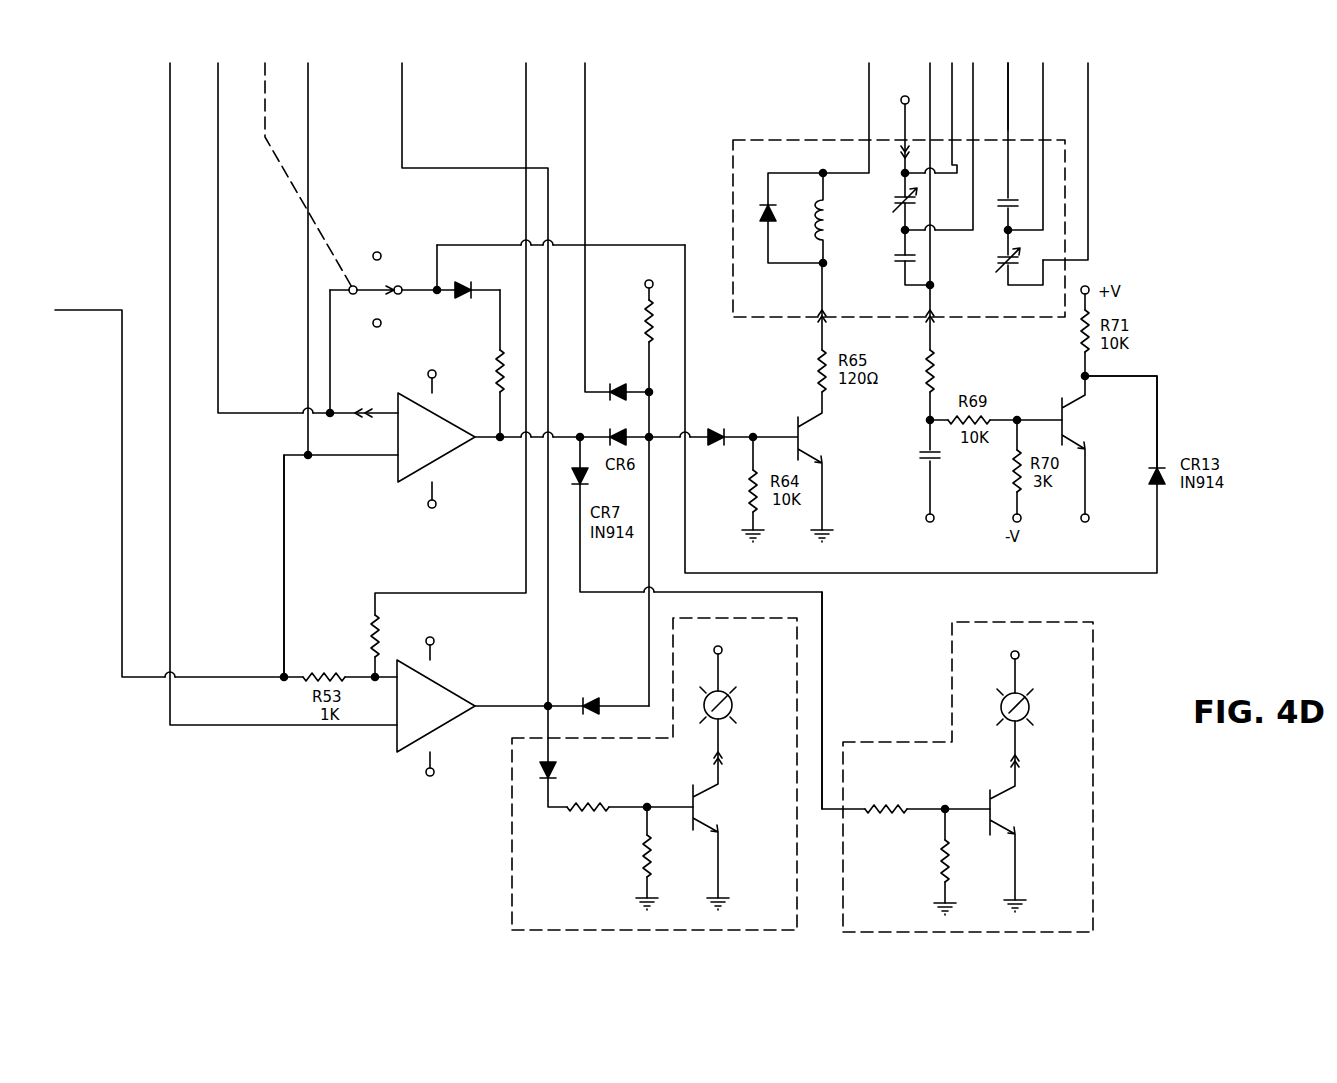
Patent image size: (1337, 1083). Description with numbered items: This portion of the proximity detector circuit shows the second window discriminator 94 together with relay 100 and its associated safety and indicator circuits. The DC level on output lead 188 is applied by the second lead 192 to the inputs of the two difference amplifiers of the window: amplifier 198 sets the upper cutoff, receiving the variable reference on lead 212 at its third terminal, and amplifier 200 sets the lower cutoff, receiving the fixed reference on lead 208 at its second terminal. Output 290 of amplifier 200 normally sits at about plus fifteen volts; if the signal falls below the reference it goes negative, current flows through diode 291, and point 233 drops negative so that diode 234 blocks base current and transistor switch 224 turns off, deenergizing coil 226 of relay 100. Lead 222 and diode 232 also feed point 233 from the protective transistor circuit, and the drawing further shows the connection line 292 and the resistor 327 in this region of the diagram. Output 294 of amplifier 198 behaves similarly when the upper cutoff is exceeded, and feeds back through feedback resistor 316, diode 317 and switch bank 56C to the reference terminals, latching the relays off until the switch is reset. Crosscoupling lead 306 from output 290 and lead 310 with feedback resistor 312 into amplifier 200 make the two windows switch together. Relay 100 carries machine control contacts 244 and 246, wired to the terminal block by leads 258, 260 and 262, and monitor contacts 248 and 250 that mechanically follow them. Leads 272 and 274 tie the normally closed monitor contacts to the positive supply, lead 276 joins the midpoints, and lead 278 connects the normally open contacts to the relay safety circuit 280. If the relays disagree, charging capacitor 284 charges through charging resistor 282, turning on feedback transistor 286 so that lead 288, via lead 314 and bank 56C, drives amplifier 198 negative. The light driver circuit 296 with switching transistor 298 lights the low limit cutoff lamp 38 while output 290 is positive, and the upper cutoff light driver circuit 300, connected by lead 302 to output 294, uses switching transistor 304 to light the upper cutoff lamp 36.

The output lead 188 is at (100, 310).
The lead 208 is at (168, 142).
The lead 212 is at (216, 130).
The lead 222 is at (587, 124).
The switch bank 56C is at (406, 256).
The lead 314 is at (330, 341).
The diode 317 is at (489, 291).
The feedback resistor 316 is at (500, 395).
The difference amplifier 198 is at (447, 442).
The second lead 192 is at (285, 545).
The lead 310 is at (526, 531).
The feedback resistor 312 is at (372, 615).
The diode 232 is at (607, 398).
The point 233 is at (649, 433).
The output lead 294 is at (581, 451).
The line to diode CR9 292 is at (649, 542).
The resistor R47 327 is at (653, 345).
The lead 274 is at (903, 158).
The coil 226 is at (819, 235).
The monitor contacts 248 is at (900, 202).
The monitor contacts 250 is at (900, 265).
The lead 278 is at (940, 135).
The lead 276 is at (949, 236).
The lead 272 is at (932, 268).
The machine control contact set 244 is at (1005, 200).
The machine control contact set 246 is at (1003, 268).
The lead 260 is at (1055, 104).
The lead 258 is at (1008, 126).
The lead 262 is at (1088, 108).
The relay 100 is at (786, 318).
The charging resistor 282 is at (920, 377).
The charging capacitor 284 is at (935, 462).
The feedback transistor 286 is at (1091, 452).
The relay safety circuit 280 is at (1166, 385).
The lead 288 is at (1157, 555).
The diode 234 is at (714, 446).
The transistor switch 224 is at (824, 462).
The difference amplifier 200 is at (441, 708).
The window discriminator 94 is at (393, 727).
The lead 306 is at (511, 669).
The output lead 290 is at (545, 689).
The diode 291 is at (618, 698).
The lead 302 is at (822, 655).
The light driver circuit 296 is at (624, 774).
The switching transistor 298 is at (690, 795).
The low limit cutoff lamp 38 is at (730, 694).
The upper cutoff light driver circuit 300 is at (1000, 777).
The switching transistor 304 is at (985, 800).
The upper cutoff lamp 36 is at (1027, 698).